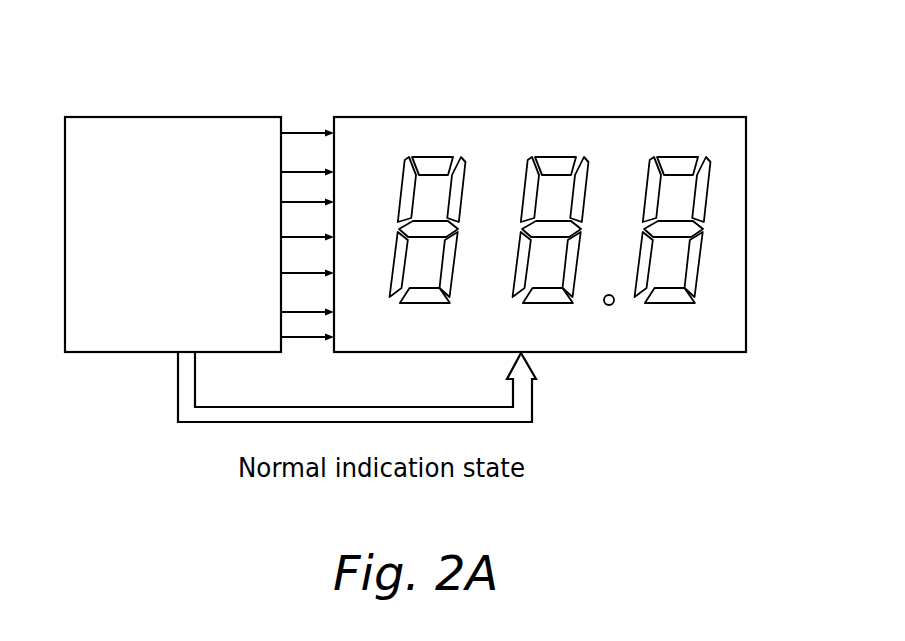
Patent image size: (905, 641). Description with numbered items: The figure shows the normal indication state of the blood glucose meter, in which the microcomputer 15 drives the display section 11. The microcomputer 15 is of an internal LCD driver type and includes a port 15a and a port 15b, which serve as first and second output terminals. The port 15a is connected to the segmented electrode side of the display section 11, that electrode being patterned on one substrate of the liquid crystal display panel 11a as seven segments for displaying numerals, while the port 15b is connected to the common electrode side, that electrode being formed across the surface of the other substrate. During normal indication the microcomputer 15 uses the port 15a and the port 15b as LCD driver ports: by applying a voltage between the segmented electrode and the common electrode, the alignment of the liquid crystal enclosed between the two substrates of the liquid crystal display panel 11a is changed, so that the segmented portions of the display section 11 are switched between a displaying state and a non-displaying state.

The microcomputer 15 is at (226, 74).
The port 15a is at (281, 134).
The port 15b is at (182, 338).
The display section 11 is at (610, 74).
The liquid crystal display panel 11a is at (702, 353).